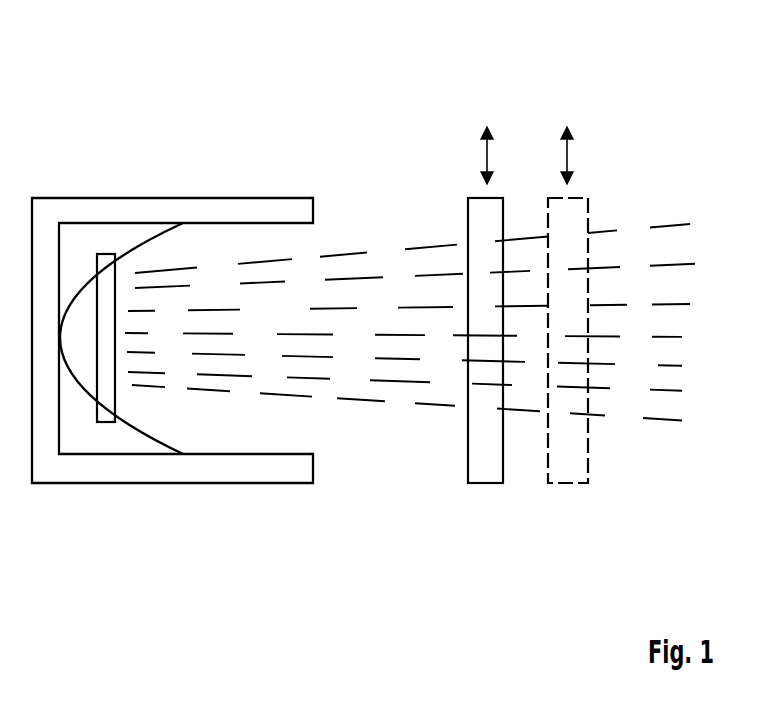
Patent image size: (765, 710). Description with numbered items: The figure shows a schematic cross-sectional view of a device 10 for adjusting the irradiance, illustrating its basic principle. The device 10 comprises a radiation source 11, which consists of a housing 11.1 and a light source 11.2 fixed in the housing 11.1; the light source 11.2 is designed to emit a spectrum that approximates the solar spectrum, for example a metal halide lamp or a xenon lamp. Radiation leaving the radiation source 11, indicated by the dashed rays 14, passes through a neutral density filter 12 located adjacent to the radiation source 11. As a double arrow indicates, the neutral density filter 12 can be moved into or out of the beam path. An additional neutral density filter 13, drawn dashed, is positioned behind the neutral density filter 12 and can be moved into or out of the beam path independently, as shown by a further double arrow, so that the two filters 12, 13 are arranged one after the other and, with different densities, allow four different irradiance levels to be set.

The device for adjusting the irradiance 10 is at (535, 46).
The radiation source 11 is at (179, 148).
The housing 11.1 is at (70, 212).
The light source 11.2 is at (108, 422).
The neutral density filter 12 is at (490, 473).
The additional neutral density filter 13 is at (560, 473).
The light rays 14 is at (421, 243).